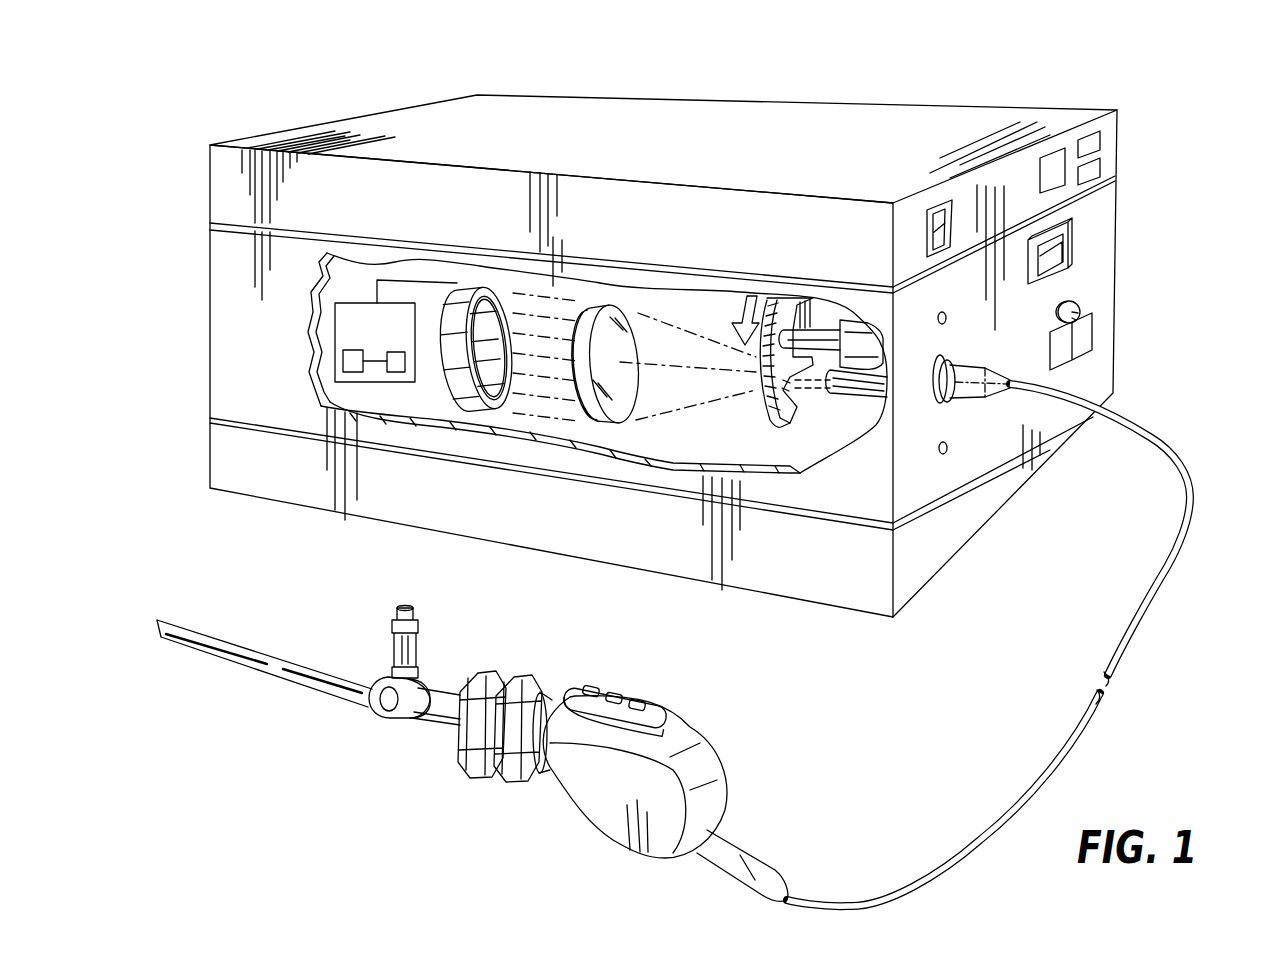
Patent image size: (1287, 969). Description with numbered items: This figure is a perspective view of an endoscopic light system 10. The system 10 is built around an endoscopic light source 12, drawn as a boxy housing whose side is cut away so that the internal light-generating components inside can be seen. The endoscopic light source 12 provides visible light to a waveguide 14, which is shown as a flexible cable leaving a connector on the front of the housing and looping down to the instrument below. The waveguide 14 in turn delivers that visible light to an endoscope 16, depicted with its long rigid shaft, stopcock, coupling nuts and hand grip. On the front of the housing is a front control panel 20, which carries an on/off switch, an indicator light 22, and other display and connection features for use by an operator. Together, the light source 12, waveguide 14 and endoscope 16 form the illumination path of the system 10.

The endoscopic light system 10 is at (320, 100).
The endoscopic light source 12 is at (710, 102).
The waveguide 14 is at (1193, 494).
The endoscope 16 is at (605, 795).
The front control panel 20 is at (1093, 260).
The indicator light 22 is at (1082, 308).